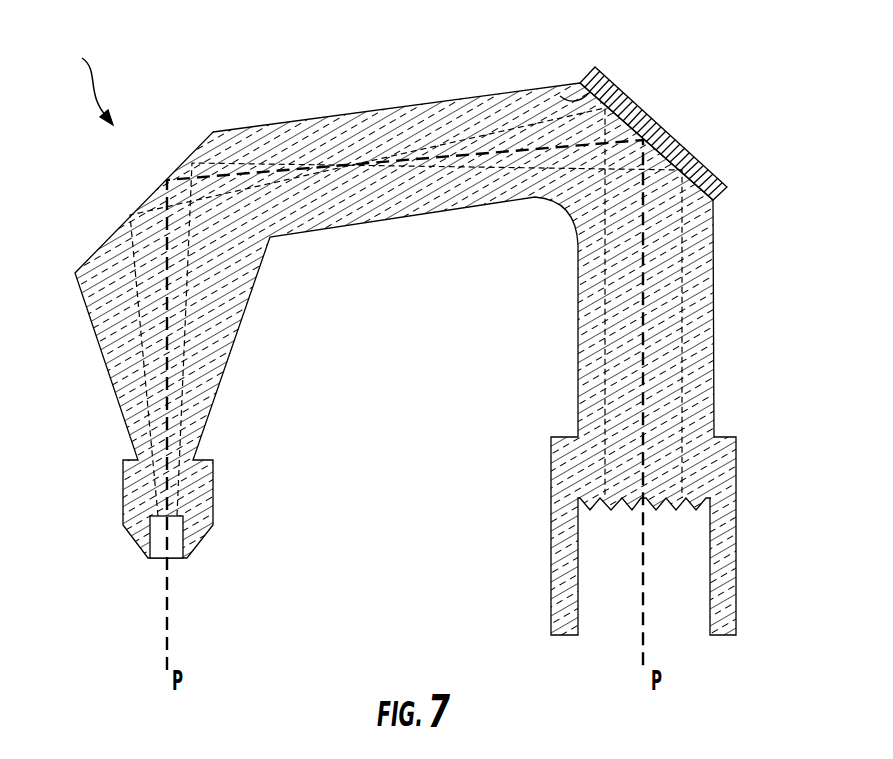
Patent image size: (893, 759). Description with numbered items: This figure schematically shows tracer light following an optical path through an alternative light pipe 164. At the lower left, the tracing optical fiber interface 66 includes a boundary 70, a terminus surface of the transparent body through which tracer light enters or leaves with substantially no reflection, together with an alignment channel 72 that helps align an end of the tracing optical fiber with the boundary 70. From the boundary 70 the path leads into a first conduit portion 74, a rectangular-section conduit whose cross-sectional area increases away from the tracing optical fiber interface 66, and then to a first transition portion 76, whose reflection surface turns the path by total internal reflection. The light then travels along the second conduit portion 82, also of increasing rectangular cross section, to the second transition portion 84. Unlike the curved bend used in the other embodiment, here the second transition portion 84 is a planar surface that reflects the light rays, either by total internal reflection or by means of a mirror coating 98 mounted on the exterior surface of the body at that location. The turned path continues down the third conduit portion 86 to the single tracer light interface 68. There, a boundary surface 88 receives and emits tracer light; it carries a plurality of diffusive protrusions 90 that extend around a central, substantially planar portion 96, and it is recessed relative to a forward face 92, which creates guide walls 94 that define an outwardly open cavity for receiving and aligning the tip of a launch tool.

The light pipe 164 is at (80, 75).
The second conduit portion 82 is at (330, 123).
The second transition portion 84 is at (562, 96).
The mirror coating 98 is at (655, 122).
The first transition portion 76 is at (183, 165).
The first conduit portion 74 is at (237, 272).
The tracing optical fiber interface 66 is at (213, 490).
The boundary 70 is at (162, 512).
The alignment channel 72 is at (177, 547).
The third conduit portion 86 is at (593, 337).
The tracer light interface 68 is at (550, 457).
The boundary surface 88 is at (582, 482).
The diffusive protrusions 90 is at (608, 507).
The central substantially planar portion 96 is at (650, 507).
The guide walls 94 is at (563, 623).
The forward face 92 is at (718, 637).